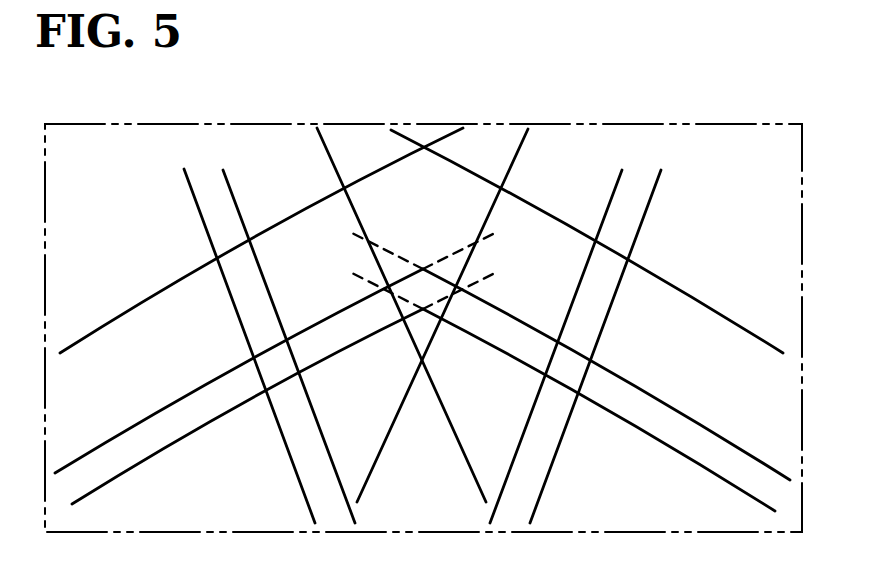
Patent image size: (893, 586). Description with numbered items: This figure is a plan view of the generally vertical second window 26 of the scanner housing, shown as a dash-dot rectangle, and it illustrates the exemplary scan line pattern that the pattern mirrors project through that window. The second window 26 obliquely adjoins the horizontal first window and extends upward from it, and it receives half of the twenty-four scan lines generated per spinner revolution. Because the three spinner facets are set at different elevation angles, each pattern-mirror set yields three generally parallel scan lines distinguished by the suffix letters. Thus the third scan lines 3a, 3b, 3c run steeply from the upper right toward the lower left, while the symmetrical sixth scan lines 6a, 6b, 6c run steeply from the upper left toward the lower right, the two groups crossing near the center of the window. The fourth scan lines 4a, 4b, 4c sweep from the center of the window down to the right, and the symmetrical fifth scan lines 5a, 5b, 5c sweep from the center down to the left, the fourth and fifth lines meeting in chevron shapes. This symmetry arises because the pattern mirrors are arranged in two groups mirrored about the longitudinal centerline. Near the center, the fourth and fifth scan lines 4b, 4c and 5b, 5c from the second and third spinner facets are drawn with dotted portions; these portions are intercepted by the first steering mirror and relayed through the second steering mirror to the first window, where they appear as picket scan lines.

The second window 26 is at (677, 123).
The third scan line, first set 3a is at (525, 143).
The third scan line, second set 3b is at (608, 197).
The third scan line, third set 3c is at (652, 198).
The fourth scan line, first set 4a is at (745, 333).
The fourth scan line, second set 4b is at (698, 423).
The fourth scan line, third set 4c is at (717, 477).
The fifth scan line, first set 5a is at (98, 332).
The fifth scan line, second set 5b is at (143, 420).
The fifth scan line, third set 5c is at (122, 475).
The sixth scan line, first set 6a is at (318, 142).
The sixth scan line, second set 6b is at (238, 197).
The sixth scan line, third set 6c is at (195, 197).